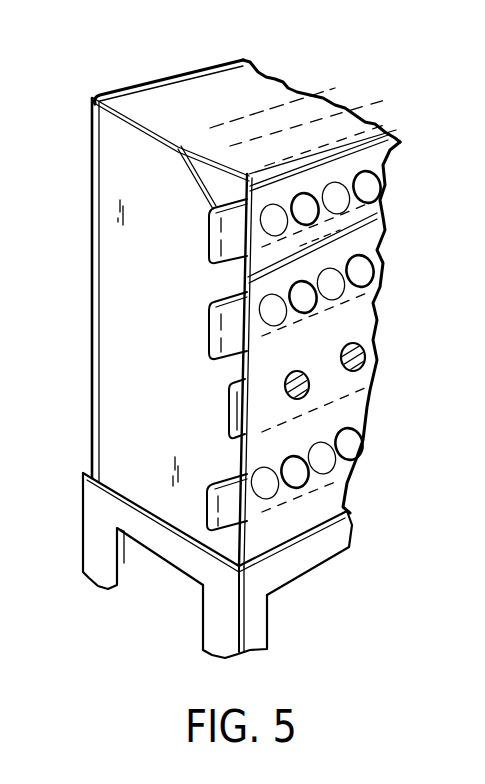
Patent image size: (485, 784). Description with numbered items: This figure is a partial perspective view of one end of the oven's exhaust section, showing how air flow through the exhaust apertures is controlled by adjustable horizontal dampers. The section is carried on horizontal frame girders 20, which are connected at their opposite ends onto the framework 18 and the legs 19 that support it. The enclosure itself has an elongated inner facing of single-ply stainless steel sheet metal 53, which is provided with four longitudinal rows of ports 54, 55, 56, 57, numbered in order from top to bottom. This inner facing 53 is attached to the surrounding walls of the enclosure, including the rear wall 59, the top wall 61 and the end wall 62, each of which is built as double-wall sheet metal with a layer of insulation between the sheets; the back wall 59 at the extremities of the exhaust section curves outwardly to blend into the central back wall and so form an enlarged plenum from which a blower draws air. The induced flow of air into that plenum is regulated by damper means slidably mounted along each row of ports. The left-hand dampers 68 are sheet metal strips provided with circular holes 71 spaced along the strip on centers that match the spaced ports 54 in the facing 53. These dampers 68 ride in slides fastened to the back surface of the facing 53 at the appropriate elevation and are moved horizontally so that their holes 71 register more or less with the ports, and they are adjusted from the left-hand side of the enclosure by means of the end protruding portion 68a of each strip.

The framework 18 is at (165, 563).
The legs 19 is at (82, 520).
The longitudinal angle girders 20 is at (320, 547).
The inner facing of sheet metal 53 is at (358, 313).
The ports 54 is at (383, 182).
The ports 55 is at (380, 268).
The ports 56 is at (367, 362).
The ports 57 is at (365, 443).
The rear wall 59 is at (90, 240).
The top wall 61 is at (193, 100).
The end wall 62 is at (166, 394).
The dampers 68 is at (224, 268).
The end protruding portion 68a is at (212, 222).
The circular holes 71 is at (380, 135).